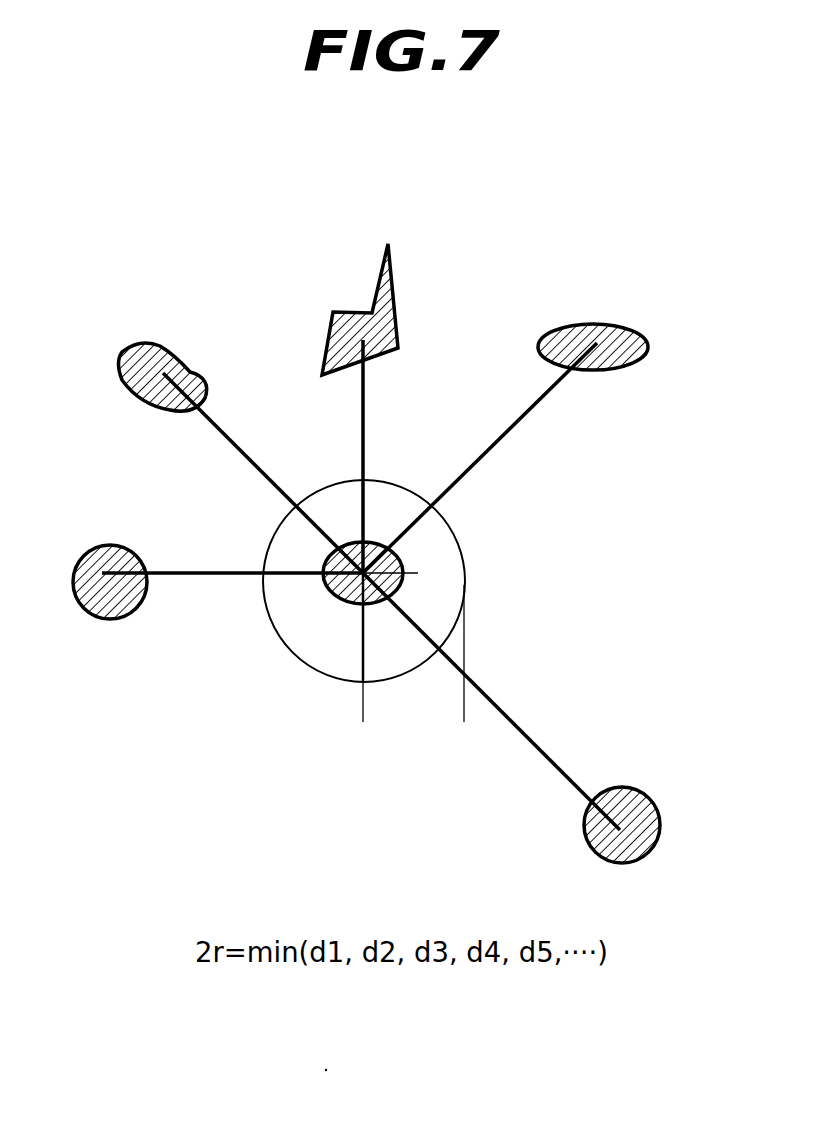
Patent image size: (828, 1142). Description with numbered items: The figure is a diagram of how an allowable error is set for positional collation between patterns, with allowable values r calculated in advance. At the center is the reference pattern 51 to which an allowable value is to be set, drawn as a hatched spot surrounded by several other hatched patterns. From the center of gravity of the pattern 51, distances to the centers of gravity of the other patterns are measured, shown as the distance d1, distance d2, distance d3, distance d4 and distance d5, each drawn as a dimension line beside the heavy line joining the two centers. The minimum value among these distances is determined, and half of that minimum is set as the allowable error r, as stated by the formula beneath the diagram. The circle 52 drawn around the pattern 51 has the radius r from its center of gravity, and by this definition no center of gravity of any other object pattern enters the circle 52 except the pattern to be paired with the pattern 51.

The pattern 51 is at (347, 542).
The circle 52 is at (312, 670).
The distance d1 is at (413, 573).
The distance d2 is at (636, 382).
The distance d3 is at (307, 623).
The distance d4 is at (362, 633).
The distance d5 is at (620, 830).
The allowable error r is at (464, 715).